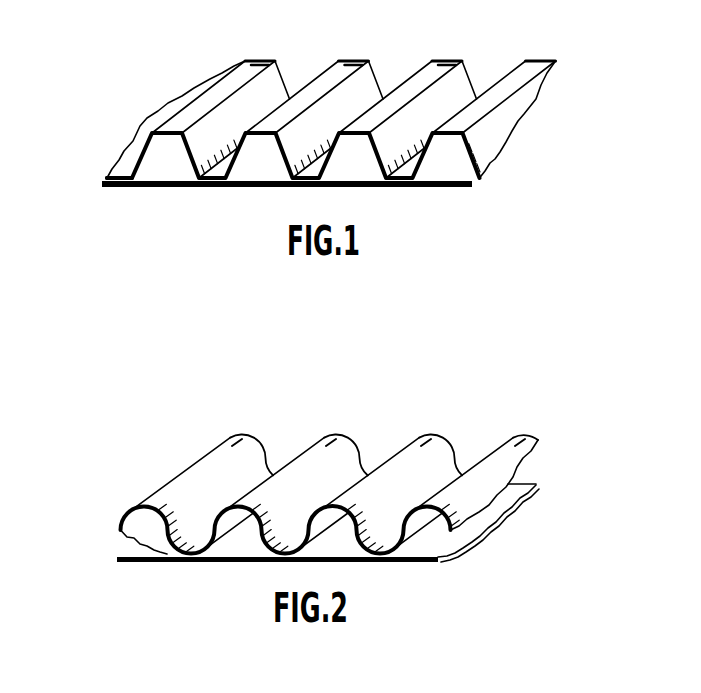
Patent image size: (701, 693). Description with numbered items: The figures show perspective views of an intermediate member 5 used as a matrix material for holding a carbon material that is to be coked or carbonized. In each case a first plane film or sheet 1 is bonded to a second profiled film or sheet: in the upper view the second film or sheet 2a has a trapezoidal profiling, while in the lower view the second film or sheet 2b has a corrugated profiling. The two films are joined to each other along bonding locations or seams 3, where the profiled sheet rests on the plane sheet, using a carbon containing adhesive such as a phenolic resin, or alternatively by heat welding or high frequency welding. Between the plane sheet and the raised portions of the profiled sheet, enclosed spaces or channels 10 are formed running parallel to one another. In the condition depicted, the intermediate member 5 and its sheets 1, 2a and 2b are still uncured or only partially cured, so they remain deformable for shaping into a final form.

In FIG. 1, the first plane film or sheet 1 is at (437, 178).
In FIG. 2, the first plane film or sheet 1 is at (450, 552).
In FIG. 1, the second profiled film or sheet having trapezoid profiling 2a is at (218, 92).
In FIG. 2, the second film or sheet having corrugated profiling 2b is at (202, 469).
In FIG. 1, the bonding locations or seams 3 is at (110, 176).
In FIG. 2, the bonding locations or seams 3 is at (157, 556).
In FIG. 1, the intermediate member 5 is at (558, 82).
In FIG. 2, the intermediate member 5 is at (541, 456).
In FIG. 1, the enclosed spaces or channels 10 is at (177, 174).
In FIG. 2, the enclosed spaces or channels 10 is at (252, 548).